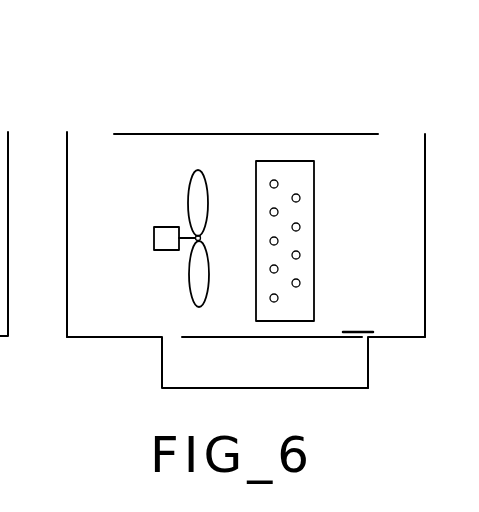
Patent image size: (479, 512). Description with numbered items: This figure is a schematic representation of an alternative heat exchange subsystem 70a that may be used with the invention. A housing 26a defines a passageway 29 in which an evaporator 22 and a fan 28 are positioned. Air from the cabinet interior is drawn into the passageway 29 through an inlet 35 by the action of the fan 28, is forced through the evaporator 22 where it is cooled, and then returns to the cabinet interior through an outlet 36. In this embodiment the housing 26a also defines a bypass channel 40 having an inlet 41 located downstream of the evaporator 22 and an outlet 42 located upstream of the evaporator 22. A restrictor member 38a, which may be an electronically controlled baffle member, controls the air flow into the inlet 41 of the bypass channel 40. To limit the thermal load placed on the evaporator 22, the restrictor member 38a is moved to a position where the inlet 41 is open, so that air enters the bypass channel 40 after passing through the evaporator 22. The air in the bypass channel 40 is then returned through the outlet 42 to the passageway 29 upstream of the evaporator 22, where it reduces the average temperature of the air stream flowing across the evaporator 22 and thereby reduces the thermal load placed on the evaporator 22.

The evaporator 22 is at (288, 166).
The housing 26a is at (66, 312).
The fan 28 is at (165, 250).
The passageway 29 is at (86, 211).
The inlet 35 is at (88, 134).
The outlet 36 is at (393, 134).
The restrictor member 38a is at (364, 326).
The bypass channel 40 is at (228, 345).
The inlet 41 is at (357, 340).
The outlet 42 is at (173, 340).
The heat exchange subsystem 70a is at (238, 88).